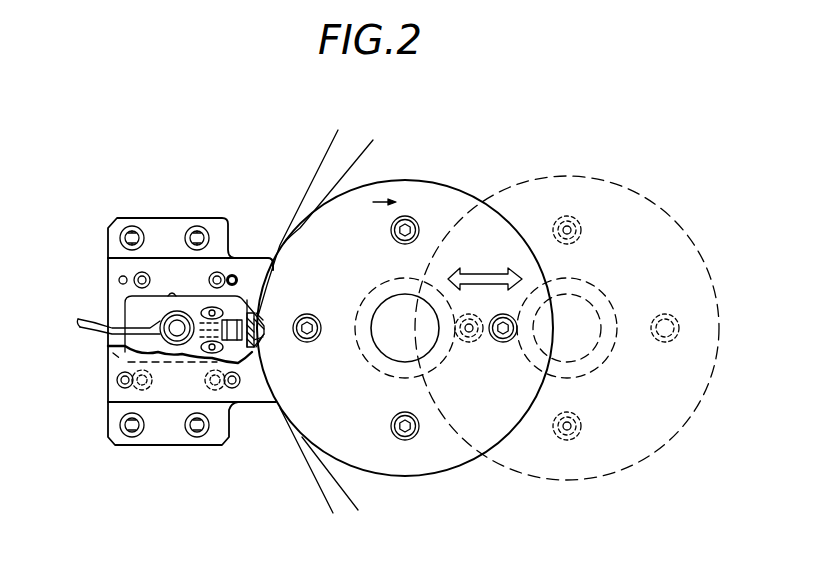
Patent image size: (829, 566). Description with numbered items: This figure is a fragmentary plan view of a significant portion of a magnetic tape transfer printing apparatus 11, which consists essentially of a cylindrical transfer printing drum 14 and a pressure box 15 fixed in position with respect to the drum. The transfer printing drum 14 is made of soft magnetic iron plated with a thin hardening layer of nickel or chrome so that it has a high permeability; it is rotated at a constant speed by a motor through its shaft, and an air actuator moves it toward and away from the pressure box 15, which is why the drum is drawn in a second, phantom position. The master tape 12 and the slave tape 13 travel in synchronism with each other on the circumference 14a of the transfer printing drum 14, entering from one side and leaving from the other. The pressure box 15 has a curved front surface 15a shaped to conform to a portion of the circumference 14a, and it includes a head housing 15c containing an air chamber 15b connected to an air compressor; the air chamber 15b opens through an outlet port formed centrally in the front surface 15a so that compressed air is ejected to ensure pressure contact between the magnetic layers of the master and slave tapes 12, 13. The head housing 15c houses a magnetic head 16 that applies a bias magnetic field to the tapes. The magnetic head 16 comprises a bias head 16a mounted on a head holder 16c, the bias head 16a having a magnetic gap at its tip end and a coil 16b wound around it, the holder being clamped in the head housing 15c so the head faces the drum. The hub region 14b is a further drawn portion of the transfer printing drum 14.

The transfer printing apparatus 11 is at (111, 217).
The master tape 12 is at (360, 155).
The slave tape 13 is at (317, 172).
The transfer printing drum 14 is at (396, 487).
The circumference 14a is at (376, 478).
The disc hub 14b is at (417, 362).
The pressure box 15 is at (106, 377).
The front surface 15a is at (263, 292).
The air chamber 15b is at (170, 290).
The head housing 15c is at (108, 290).
The magnetic head 16 is at (193, 348).
The bias head 16a is at (240, 366).
The coil 16b is at (247, 347).
The head holder 16c is at (222, 364).